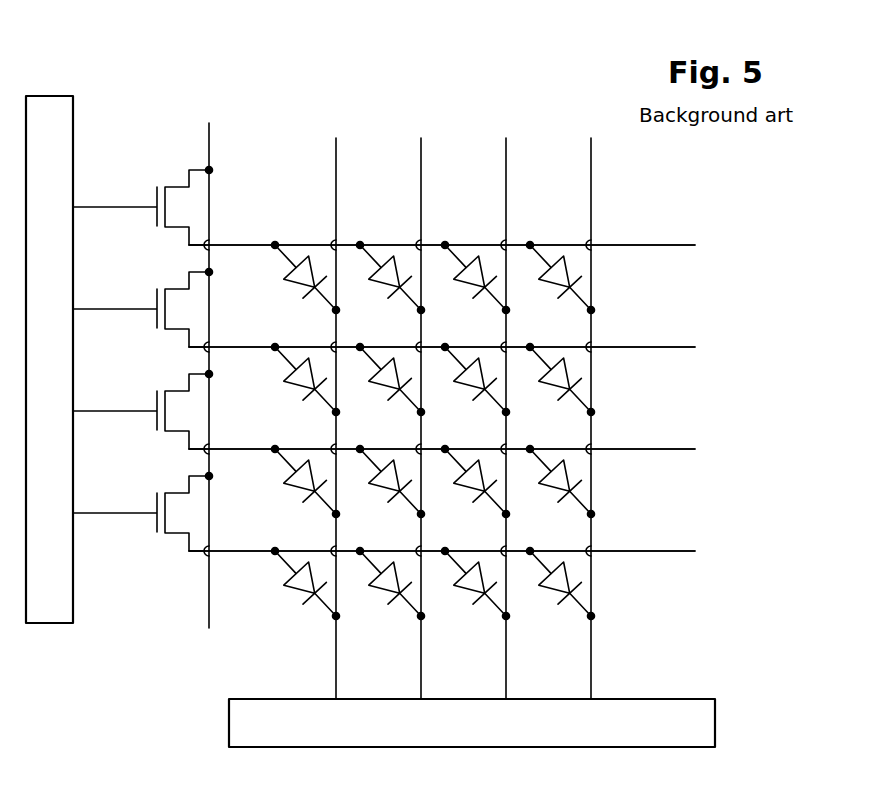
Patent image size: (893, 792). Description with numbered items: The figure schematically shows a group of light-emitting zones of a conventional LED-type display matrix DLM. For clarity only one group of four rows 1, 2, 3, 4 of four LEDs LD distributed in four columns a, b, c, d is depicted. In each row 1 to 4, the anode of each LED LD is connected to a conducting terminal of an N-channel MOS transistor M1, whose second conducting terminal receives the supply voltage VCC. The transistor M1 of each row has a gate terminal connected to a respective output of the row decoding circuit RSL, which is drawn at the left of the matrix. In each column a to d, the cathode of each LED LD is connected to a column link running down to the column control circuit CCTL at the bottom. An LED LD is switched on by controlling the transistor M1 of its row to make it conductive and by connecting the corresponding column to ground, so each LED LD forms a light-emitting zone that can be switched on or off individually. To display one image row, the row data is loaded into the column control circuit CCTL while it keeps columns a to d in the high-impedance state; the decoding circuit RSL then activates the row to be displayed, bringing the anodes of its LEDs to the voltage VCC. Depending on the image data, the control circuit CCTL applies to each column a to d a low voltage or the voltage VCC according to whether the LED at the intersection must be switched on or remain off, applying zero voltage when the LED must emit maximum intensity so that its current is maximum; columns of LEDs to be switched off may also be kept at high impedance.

The row decoding circuit RSL is at (49, 359).
The N-channel MOS transistor M1 is at (157, 227).
The supply voltage VCC is at (208, 365).
The LED LD is at (388, 256).
The column a is at (336, 406).
The column b is at (420, 406).
The column c is at (505, 406).
The column d is at (590, 406).
The row 1 is at (452, 245).
The row 2 is at (452, 347).
The row 3 is at (452, 449).
The row 4 is at (452, 551).
The column control circuit CCTL is at (472, 723).
The LED-type display matrix DLM is at (132, 673).